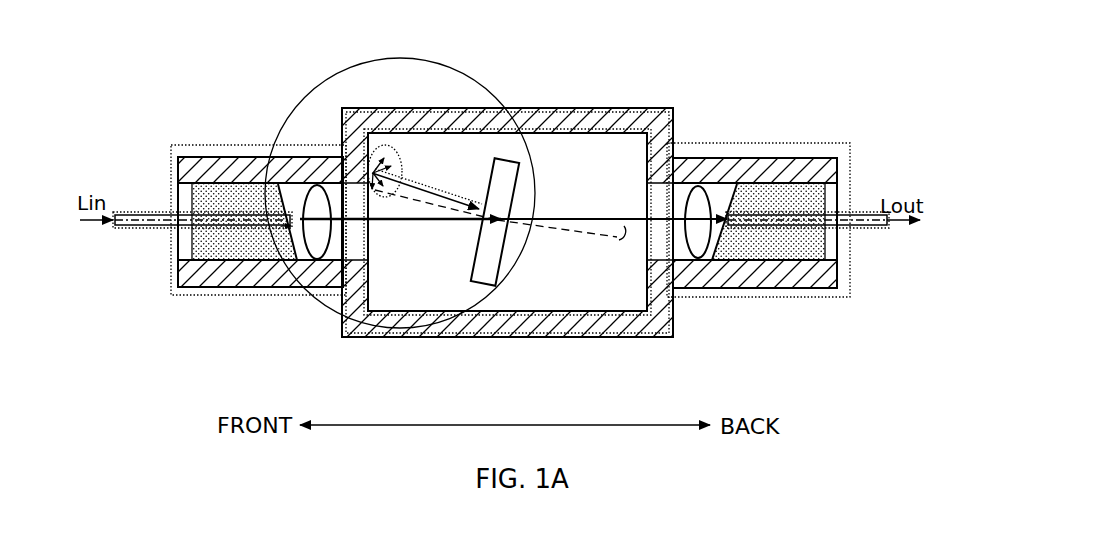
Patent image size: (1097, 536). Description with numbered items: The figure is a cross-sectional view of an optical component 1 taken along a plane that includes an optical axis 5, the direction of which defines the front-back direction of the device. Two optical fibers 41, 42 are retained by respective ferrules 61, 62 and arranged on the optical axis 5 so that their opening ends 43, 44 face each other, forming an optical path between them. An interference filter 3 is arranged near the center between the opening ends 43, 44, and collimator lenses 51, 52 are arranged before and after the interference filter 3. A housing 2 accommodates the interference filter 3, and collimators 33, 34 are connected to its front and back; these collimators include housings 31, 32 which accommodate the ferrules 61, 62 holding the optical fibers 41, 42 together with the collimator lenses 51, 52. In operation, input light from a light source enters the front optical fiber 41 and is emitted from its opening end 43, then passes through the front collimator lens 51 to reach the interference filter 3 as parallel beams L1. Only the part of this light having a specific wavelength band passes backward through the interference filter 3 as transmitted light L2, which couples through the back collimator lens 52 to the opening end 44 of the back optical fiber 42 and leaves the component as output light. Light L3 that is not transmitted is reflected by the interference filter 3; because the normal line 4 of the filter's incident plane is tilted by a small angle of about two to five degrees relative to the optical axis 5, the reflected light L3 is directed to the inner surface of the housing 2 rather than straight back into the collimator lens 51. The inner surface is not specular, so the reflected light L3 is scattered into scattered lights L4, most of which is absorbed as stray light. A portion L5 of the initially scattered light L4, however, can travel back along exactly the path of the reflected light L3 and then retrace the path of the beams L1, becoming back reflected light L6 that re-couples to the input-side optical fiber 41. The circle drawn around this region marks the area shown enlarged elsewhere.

The optical component 1 is at (590, 53).
The housing 2 is at (658, 108).
The interference filter 3 is at (518, 182).
The normal line 4 is at (577, 240).
The optical axis 5 is at (386, 333).
The housing 31 is at (180, 296).
The housing 32 is at (800, 300).
The collimator 33 is at (216, 167).
The collimator 34 is at (784, 166).
The optical fiber 41 is at (147, 213).
The optical fiber 42 is at (872, 212).
The opening end 43 is at (298, 262).
The opening end 44 is at (719, 262).
The collimator lens 51 is at (316, 260).
The collimator lens 52 is at (700, 260).
The ferrule 61 is at (204, 243).
The ferrule 62 is at (784, 262).
The parallel beams L1 is at (440, 224).
The transmitted light L2 is at (586, 217).
The reflected light L3 is at (427, 186).
The scattered lights L4 is at (386, 145).
The light L5 is at (416, 183).
The back reflected light L6 is at (397, 203).